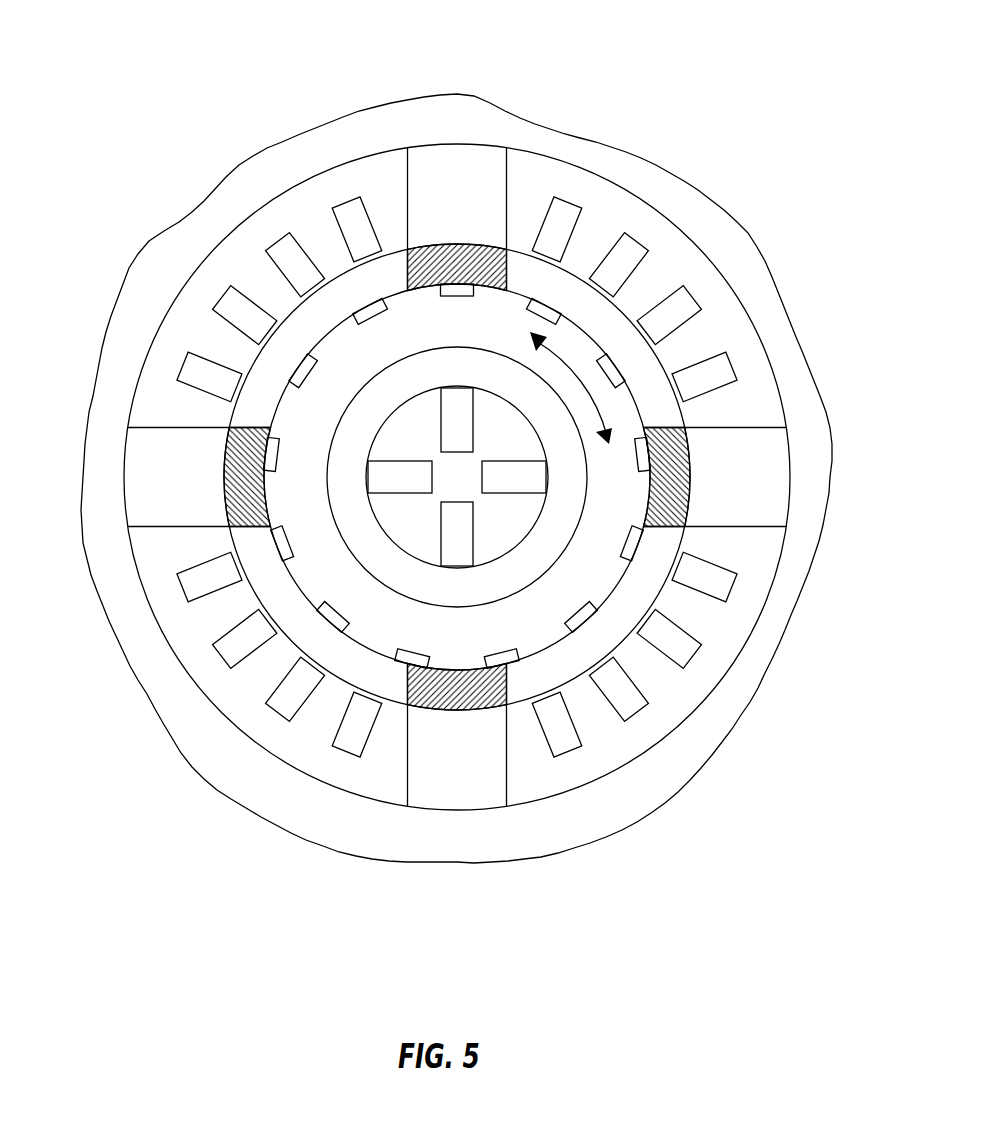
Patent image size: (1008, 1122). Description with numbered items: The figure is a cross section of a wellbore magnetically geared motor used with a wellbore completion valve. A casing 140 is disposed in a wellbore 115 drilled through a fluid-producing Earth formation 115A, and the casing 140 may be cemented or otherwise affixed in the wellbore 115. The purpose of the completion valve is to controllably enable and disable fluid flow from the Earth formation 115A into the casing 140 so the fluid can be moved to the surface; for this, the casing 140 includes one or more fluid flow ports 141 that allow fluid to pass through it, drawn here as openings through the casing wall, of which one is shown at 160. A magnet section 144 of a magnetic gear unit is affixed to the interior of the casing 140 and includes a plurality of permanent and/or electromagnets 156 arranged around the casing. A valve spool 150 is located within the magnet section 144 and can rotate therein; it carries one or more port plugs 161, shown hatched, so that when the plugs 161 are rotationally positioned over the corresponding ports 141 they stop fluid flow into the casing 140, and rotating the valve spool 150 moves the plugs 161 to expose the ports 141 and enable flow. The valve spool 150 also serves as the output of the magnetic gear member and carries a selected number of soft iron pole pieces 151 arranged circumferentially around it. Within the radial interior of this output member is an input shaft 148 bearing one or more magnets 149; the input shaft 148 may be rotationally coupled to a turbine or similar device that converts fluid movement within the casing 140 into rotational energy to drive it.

The Earth formation 115A is at (178, 66).
The wellbore 115 is at (820, 440).
The casing 140 is at (153, 618).
The magnet section 144 is at (157, 563).
The channel 160 is at (140, 458).
The fluid flow ports 141 is at (480, 795).
The port plugs 161 is at (232, 506).
The magnets 156 is at (182, 360).
The valve spool 150 is at (302, 576).
The pole pieces 151 is at (577, 613).
The input shaft 148 is at (517, 528).
The magnets 149 is at (545, 478).